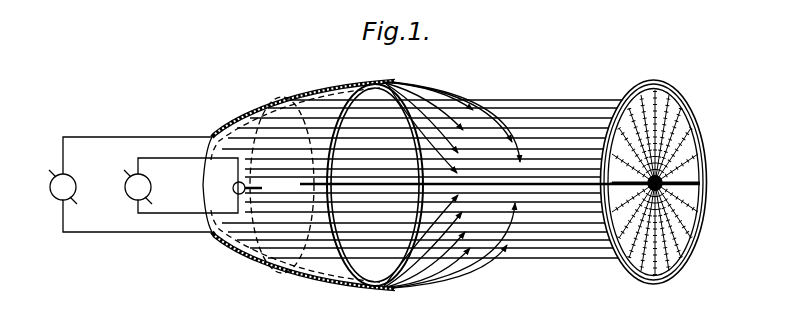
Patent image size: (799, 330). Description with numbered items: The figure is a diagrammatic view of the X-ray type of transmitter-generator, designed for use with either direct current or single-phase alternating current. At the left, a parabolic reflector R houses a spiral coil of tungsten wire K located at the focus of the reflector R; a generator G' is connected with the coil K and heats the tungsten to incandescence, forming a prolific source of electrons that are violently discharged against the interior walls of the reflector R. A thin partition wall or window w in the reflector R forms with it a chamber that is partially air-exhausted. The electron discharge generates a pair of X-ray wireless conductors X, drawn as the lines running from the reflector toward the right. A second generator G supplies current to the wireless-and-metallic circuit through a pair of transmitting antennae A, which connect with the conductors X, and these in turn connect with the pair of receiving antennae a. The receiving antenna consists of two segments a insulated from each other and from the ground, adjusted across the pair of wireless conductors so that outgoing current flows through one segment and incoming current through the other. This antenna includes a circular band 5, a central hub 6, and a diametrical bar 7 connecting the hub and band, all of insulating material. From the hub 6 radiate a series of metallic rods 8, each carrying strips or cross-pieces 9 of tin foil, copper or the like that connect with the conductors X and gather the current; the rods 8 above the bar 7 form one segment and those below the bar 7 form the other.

The generator G is at (117, 184).
The generator G' is at (168, 185).
The parabolic reflector R is at (205, 185).
The spiral coil of tungsten wire K is at (229, 188).
The window w is at (472, 188).
The X-ray wireless conductors X is at (422, 179).
The transmitting antennae A is at (451, 181).
The receiving antenna segments a is at (654, 185).
The circular band 5 is at (698, 128).
The strips or cross-pieces 9 is at (690, 252).
The metallic rods 8 is at (670, 113).
The diametrical bar 7 is at (700, 172).
The central hub 6 is at (667, 187).